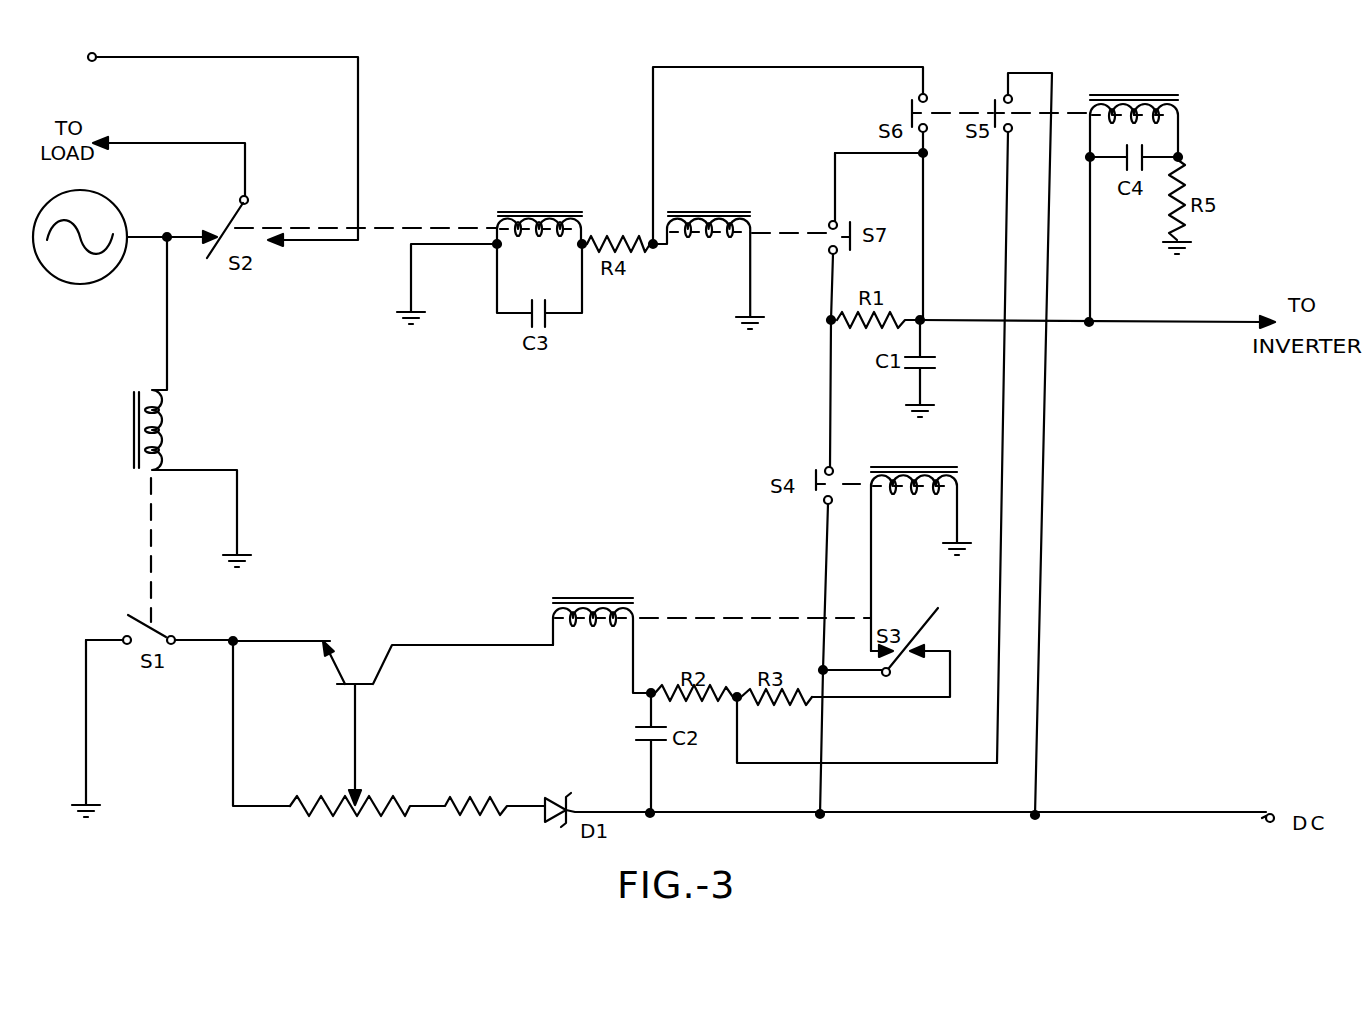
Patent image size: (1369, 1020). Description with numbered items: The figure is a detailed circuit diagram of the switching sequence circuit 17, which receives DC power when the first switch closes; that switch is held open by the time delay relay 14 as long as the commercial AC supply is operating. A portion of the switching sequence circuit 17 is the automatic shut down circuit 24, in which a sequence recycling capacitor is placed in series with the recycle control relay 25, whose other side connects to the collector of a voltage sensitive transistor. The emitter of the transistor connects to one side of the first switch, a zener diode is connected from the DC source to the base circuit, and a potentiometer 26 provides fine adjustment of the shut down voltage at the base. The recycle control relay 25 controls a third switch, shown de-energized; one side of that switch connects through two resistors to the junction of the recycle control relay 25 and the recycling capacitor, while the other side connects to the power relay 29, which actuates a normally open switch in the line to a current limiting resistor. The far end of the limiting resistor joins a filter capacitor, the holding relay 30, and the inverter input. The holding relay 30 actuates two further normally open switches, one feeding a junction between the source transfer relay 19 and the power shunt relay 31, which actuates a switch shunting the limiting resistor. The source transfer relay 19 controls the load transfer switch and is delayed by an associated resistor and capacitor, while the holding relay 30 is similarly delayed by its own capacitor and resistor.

The time delay relay 14 is at (130, 440).
The switching sequence circuit 17 is at (456, 88).
The source transfer relay 19 is at (553, 215).
The automatic shut down circuit 24 is at (508, 612).
The recycle control relay 25 is at (593, 600).
The potentiometer 26 is at (348, 803).
The power relay 29 is at (917, 466).
The holding relay 30 is at (1135, 98).
The power shunt relay 31 is at (731, 215).